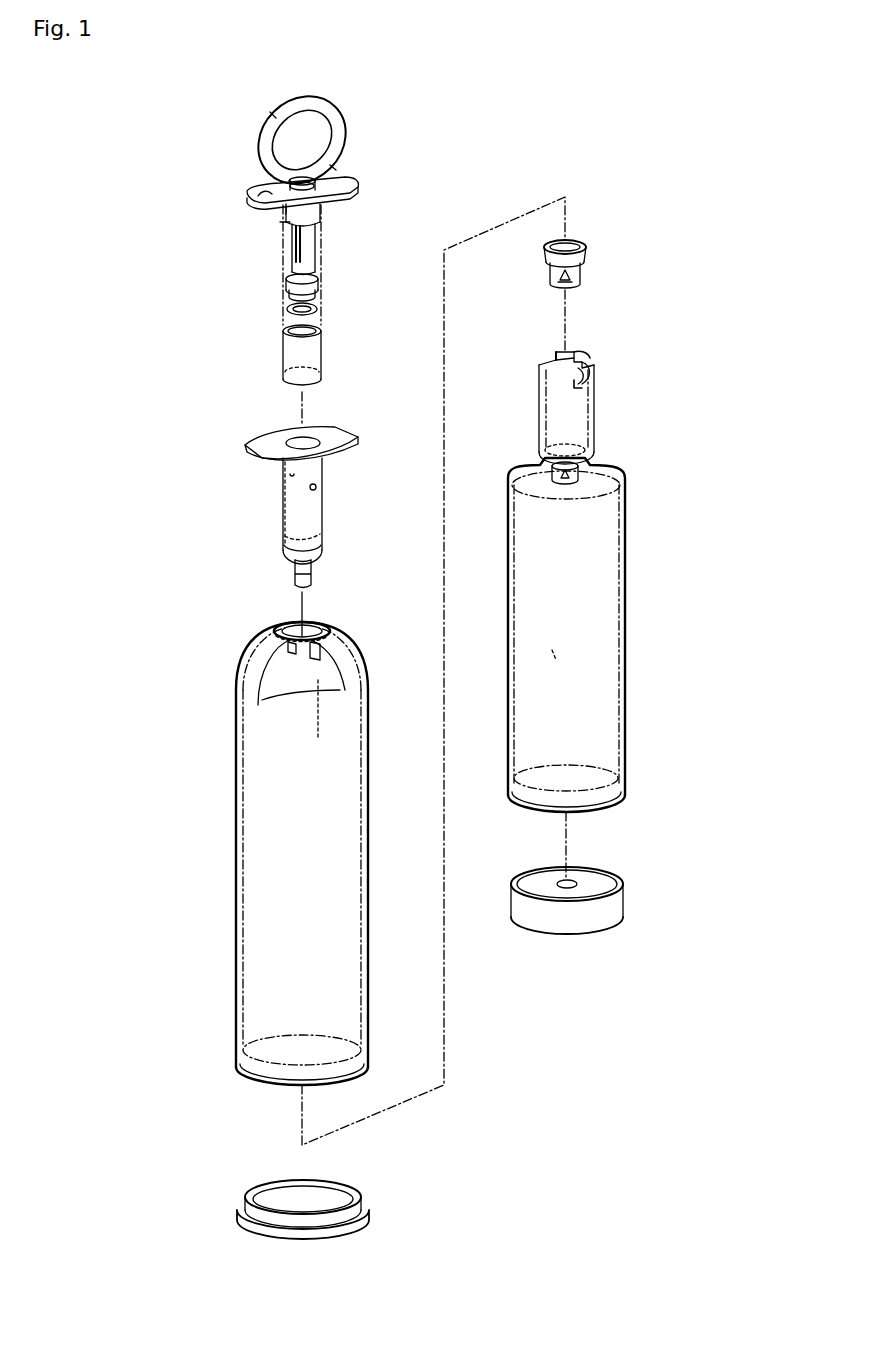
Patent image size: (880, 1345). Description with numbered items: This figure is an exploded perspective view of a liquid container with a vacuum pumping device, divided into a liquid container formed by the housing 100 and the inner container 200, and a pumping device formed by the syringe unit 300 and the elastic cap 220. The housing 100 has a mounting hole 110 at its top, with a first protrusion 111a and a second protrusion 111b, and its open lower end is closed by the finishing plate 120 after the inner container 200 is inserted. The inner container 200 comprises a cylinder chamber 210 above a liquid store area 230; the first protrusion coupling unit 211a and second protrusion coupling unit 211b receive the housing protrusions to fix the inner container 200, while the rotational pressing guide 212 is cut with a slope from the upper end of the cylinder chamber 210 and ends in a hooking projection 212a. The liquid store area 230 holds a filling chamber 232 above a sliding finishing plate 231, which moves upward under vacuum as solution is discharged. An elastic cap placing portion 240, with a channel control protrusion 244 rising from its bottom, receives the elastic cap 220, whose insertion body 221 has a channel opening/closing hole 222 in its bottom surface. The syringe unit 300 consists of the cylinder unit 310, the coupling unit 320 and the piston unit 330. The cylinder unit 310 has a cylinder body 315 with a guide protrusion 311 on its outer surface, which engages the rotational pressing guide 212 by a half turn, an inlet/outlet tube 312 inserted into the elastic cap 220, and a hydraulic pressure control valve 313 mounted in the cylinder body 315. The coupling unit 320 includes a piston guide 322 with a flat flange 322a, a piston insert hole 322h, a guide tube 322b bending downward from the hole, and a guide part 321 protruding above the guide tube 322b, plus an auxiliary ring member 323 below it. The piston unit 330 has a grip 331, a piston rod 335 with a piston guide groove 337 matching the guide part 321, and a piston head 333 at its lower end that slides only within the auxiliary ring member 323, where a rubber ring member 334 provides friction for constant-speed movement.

The housing 100 is at (232, 840).
The mounting hole 110 is at (320, 628).
The first protrusion 111a is at (290, 648).
The second protrusion 111b is at (270, 696).
The finishing plate 120 is at (262, 1193).
The inner container 200 is at (702, 890).
The cylinder chamber 210 is at (536, 403).
The first protrusion coupling unit 211a is at (590, 366).
The second protrusion coupling unit 211b is at (562, 355).
The rotational pressing guide 212 is at (596, 380).
The hooking projection 212a is at (590, 386).
The elastic cap 220 is at (598, 240).
The insertion body 221 is at (588, 250).
The channel opening/closing hole 222 is at (585, 275).
The liquid store area 230 is at (636, 601).
The sliding finishing plate 231 is at (625, 896).
The filling chamber 232 is at (565, 655).
The elastic cap placing portion 240 is at (584, 458).
The channel control protrusion 244 is at (610, 484).
The syringe unit 300 is at (69, 605).
The cylinder unit 310 is at (256, 416).
The guide protrusion 311 is at (310, 488).
The inlet/outlet tube 312 is at (300, 590).
The hydraulic pressure control valve 313 is at (290, 535).
The cylinder body 315 is at (283, 502).
The coupling unit 320 is at (131, 285).
The guide part 321 is at (272, 190).
The piston guide 322 is at (179, 188).
The flange 322a is at (268, 196).
The piston insert hole 322h is at (287, 212).
The guide tube 322b is at (282, 224).
The auxiliary ring member 323 is at (282, 355).
The piston unit 330 is at (392, 300).
The grip 331 is at (338, 122).
The piston head 333 is at (322, 282).
The rubber ring member 334 is at (322, 308).
The piston rod 335 is at (310, 228).
The piston guide groove 337 is at (300, 258).